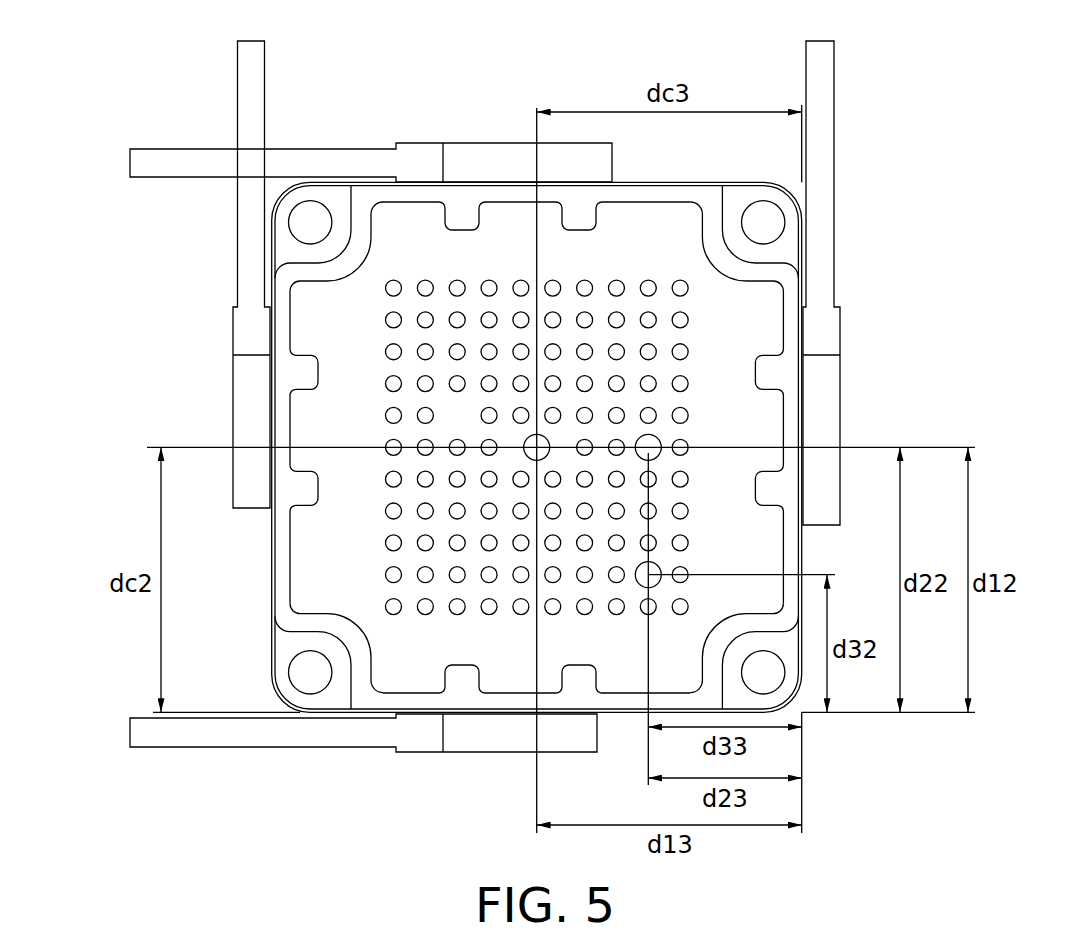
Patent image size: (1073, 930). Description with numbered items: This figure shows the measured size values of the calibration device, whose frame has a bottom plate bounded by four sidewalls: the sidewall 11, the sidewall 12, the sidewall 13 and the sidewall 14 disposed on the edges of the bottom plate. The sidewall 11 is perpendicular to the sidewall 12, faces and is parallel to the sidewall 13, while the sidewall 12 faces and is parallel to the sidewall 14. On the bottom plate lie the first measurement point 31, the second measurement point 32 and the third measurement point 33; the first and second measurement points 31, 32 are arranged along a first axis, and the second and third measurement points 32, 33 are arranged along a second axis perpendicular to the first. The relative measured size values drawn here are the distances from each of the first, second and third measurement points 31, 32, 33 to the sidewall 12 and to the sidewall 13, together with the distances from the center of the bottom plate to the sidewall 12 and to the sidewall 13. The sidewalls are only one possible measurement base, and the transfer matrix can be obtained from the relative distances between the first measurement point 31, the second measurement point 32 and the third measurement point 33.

The sidewall 11 is at (277, 580).
The sidewall 12 is at (465, 703).
The sidewall 13 is at (790, 328).
The sidewall 14 is at (492, 195).
The first measurement point 31 is at (532, 455).
The second measurement point 32 is at (650, 445).
The third measurement point 33 is at (654, 568).